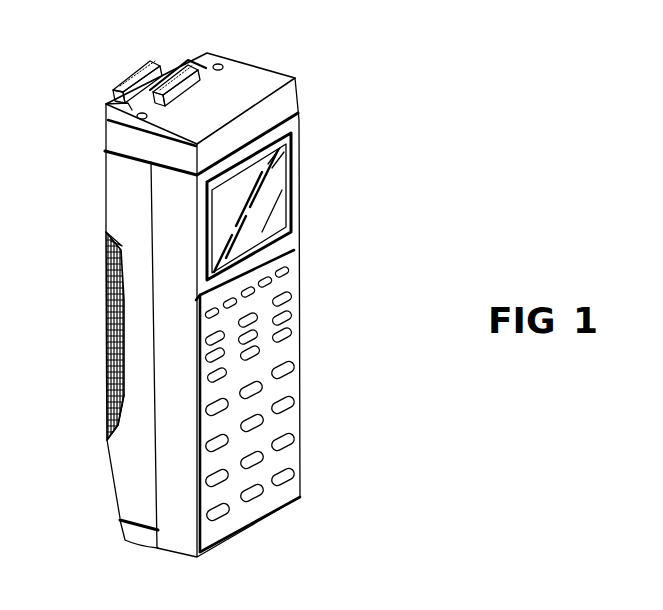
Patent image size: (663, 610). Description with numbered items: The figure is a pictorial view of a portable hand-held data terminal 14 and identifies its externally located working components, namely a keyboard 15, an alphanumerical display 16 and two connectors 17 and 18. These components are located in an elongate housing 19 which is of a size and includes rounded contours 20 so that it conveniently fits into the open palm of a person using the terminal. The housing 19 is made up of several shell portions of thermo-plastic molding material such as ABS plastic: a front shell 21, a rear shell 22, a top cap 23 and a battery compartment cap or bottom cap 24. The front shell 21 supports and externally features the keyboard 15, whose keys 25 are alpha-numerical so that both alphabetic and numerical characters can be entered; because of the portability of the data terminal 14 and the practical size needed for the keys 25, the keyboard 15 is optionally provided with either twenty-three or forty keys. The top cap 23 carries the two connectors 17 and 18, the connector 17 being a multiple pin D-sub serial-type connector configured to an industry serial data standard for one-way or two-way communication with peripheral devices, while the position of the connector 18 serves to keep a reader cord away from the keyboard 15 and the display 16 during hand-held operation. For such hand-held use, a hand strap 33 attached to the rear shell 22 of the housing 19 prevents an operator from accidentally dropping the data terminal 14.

The data terminal 14 is at (314, 89).
The keyboard 15 is at (287, 382).
The alphanumerical display 16 is at (282, 175).
The connector 17 is at (128, 88).
The connector 18 is at (182, 68).
The housing 19 is at (107, 317).
The rounded contours 20 is at (107, 362).
The front shell 21 is at (298, 280).
The rear shell 22 is at (105, 448).
The top cap 23 is at (252, 75).
The bottom cap 24 is at (137, 538).
The keys 25 is at (287, 403).
The hand strap 33 is at (107, 268).